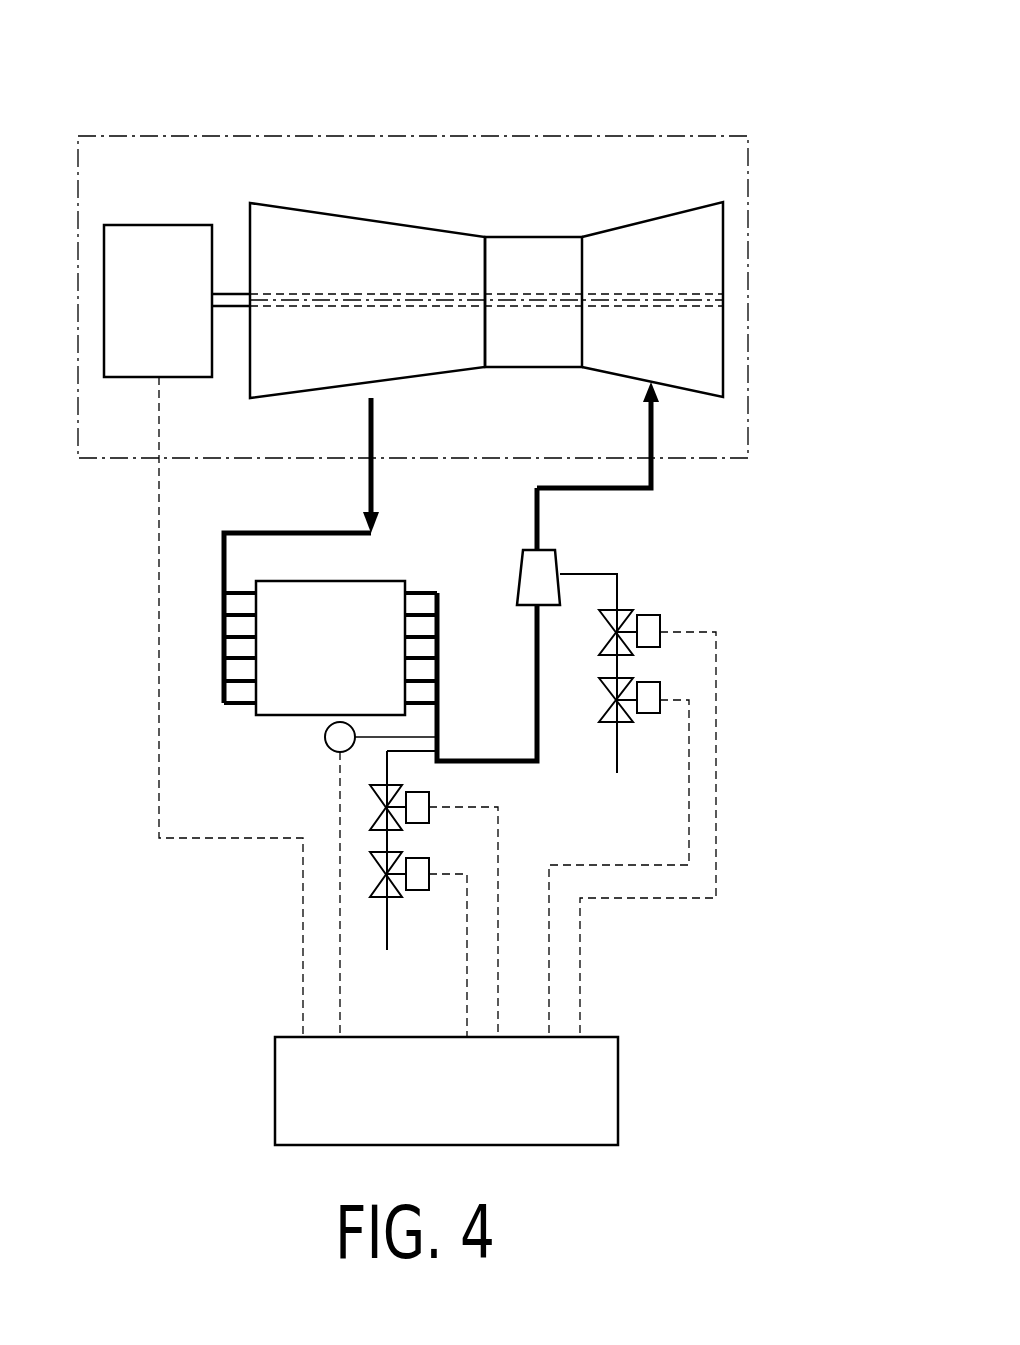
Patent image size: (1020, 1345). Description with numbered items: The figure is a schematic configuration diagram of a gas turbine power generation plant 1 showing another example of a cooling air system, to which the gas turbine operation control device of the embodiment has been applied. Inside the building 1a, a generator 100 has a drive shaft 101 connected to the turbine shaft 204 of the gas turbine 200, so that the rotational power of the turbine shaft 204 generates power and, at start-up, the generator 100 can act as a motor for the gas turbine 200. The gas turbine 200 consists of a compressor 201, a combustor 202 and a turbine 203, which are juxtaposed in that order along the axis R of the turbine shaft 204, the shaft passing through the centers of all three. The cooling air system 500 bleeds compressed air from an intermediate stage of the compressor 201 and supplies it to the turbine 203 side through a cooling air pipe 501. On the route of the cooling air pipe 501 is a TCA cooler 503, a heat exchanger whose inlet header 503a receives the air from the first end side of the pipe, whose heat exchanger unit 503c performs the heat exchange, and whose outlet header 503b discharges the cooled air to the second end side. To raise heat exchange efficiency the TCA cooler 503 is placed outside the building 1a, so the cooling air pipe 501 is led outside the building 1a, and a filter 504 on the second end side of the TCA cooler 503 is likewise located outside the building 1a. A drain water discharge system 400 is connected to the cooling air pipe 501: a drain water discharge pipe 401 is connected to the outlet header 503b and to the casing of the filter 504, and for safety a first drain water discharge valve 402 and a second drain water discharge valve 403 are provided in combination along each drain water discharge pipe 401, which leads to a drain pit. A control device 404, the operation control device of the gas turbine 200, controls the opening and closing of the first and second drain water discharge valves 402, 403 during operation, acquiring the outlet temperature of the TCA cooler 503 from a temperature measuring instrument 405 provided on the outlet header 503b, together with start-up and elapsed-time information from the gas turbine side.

The gas turbine power generation plant 1 is at (735, 100).
The building 1a is at (749, 170).
The generator 100 is at (155, 225).
The drive shaft 101 is at (231, 294).
The gas turbine 200 is at (440, 228).
The compressor 201 is at (300, 207).
The combustor 202 is at (514, 237).
The turbine 203 is at (658, 217).
The turbine shaft 204 is at (352, 294).
The axis R is at (688, 300).
The drain water discharge system 400 is at (684, 585).
The drain water discharge pipe 401 is at (617, 760).
The first drain water discharge valve 402 is at (627, 610).
The second drain water discharge valve 403 is at (633, 680).
The control device 404 is at (618, 1090).
The temperature measuring instrument 405 is at (325, 737).
The cooling air system 500 is at (252, 718).
The cooling air pipe 501 is at (272, 533).
The TCA cooler 503 is at (311, 559).
The inlet header 503a is at (224, 622).
The outlet header 503b is at (438, 620).
The heat exchanger unit 503c is at (275, 715).
The filter 504 is at (525, 607).